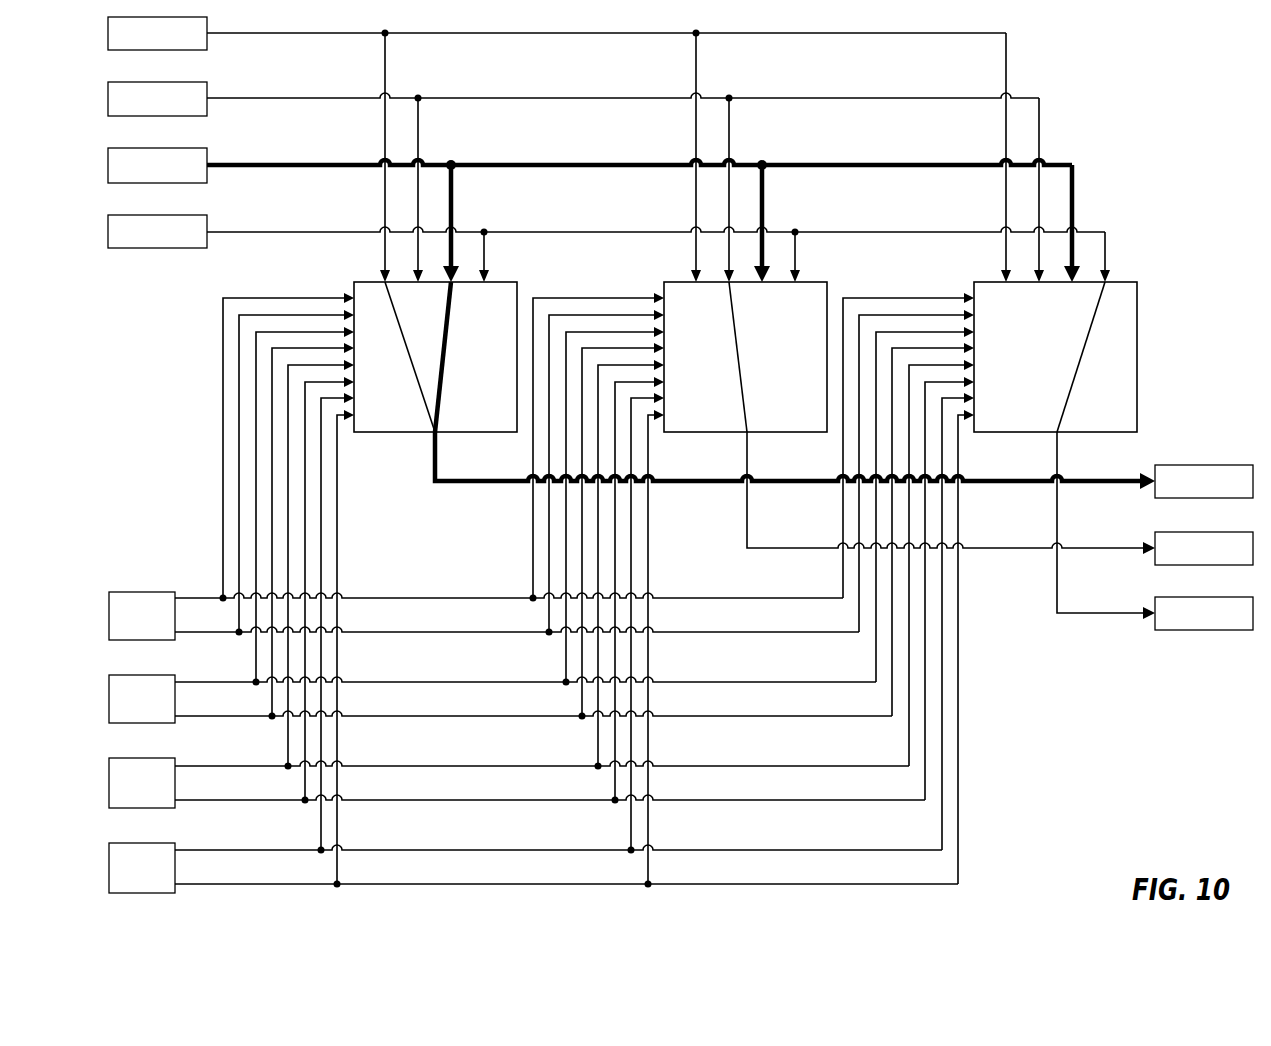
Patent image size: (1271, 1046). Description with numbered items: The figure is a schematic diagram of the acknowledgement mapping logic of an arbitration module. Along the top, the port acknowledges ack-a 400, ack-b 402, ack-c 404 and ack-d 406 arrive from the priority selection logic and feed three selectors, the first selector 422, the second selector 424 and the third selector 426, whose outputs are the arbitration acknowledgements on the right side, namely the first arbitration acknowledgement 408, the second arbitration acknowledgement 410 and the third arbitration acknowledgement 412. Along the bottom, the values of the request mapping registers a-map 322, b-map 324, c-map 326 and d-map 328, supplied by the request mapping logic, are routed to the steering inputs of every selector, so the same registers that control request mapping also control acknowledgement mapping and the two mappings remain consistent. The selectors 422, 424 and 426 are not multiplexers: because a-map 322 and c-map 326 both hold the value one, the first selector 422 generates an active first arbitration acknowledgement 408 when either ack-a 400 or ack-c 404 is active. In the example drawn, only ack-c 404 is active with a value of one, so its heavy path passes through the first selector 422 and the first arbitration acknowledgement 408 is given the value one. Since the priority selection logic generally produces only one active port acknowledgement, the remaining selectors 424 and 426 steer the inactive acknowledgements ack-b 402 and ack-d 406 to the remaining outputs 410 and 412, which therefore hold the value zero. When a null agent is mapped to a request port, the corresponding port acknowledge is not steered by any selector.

The port acknowledge ack-a 400 is at (125, 50).
The port acknowledge ack-b 402 is at (125, 116).
The port acknowledge ack-c 404 is at (125, 183).
The port acknowledge ack-d 406 is at (125, 248).
The selector sel-1 422 is at (370, 432).
The selector sel-2 424 is at (680, 432).
The selector sel-3 426 is at (990, 432).
The arbitration acknowledgement ack-1 408 is at (1170, 465).
The arbitration acknowledgement ack-2 410 is at (1170, 532).
The arbitration acknowledgement ack-3 412 is at (1170, 597).
The request mapping register a-map 322 is at (125, 592).
The request mapping register b-map 324 is at (125, 675).
The request mapping register c-map 326 is at (125, 758).
The request mapping register d-map 328 is at (125, 843).